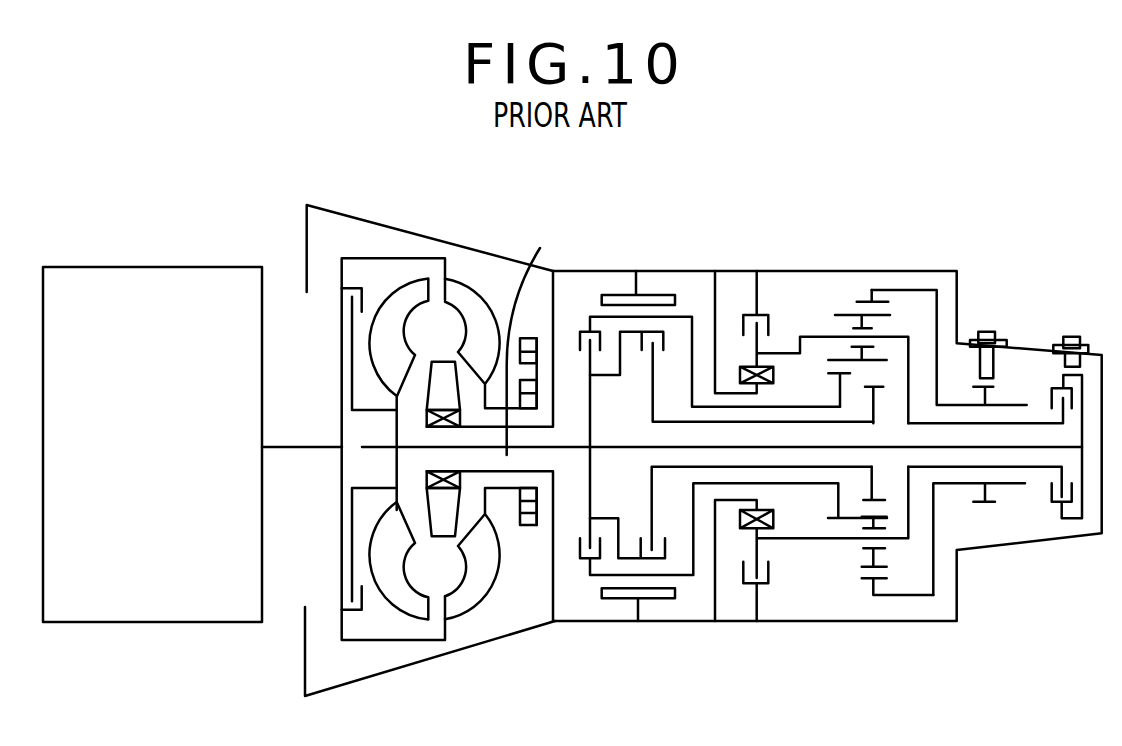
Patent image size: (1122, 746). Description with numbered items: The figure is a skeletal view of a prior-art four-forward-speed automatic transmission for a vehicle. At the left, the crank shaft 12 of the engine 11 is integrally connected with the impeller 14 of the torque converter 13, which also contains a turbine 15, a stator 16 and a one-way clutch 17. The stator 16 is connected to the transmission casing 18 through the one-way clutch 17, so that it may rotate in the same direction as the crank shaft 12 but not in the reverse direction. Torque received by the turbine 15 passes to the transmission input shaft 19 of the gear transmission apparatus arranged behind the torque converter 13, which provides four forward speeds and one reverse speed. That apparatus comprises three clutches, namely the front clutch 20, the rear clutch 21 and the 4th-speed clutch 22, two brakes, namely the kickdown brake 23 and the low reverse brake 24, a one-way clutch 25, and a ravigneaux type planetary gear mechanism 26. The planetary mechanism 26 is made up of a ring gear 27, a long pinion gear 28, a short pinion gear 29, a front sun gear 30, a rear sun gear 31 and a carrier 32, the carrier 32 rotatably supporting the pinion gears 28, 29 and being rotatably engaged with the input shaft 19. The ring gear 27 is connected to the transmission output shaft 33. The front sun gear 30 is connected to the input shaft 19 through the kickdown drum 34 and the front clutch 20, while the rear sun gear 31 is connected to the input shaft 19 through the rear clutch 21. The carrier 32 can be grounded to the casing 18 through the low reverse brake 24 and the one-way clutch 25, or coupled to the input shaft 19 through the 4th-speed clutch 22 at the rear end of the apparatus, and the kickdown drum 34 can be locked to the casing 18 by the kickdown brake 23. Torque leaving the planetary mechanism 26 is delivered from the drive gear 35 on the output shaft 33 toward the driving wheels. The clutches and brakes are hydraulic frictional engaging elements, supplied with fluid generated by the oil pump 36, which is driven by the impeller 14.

The engine 11 is at (152, 277).
The crank shaft 12 is at (302, 445).
The torque converter 13 is at (397, 248).
The impeller 14 is at (475, 300).
The turbine 15 is at (390, 575).
The stator 16 is at (437, 527).
The one-way clutch 17 is at (427, 482).
The transmission casing 18 is at (793, 623).
The transmission input shaft 19 is at (539, 337).
The front clutch 20 is at (583, 559).
The rear clutch 21 is at (649, 556).
The 4th-speed clutch 22 is at (1053, 518).
The kickdown brake 23 is at (621, 297).
The low reverse brake 24 is at (745, 586).
The one-way clutch 25 is at (737, 367).
The ravigneaux type planetary gear mechanism 26 is at (815, 295).
The ring gear 27 is at (883, 582).
The long pinion gear 28 is at (843, 312).
The short pinion gear 29 is at (864, 568).
The front sun gear 30 is at (843, 521).
The rear sun gear 31 is at (880, 387).
The carrier 32 is at (897, 337).
The transmission output shaft 33 is at (985, 485).
The kickdown drum 34 is at (686, 575).
The drive gear 35 is at (987, 503).
The oil pump 36 is at (522, 527).